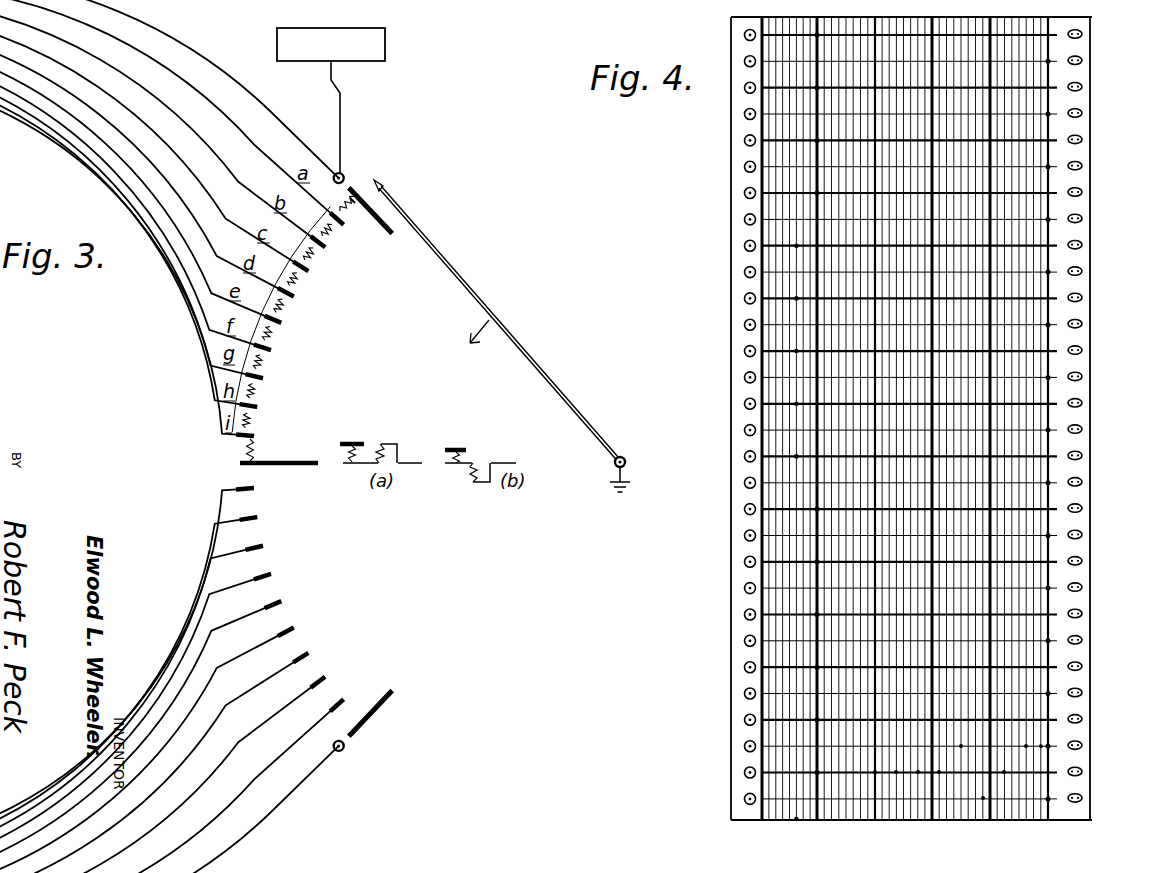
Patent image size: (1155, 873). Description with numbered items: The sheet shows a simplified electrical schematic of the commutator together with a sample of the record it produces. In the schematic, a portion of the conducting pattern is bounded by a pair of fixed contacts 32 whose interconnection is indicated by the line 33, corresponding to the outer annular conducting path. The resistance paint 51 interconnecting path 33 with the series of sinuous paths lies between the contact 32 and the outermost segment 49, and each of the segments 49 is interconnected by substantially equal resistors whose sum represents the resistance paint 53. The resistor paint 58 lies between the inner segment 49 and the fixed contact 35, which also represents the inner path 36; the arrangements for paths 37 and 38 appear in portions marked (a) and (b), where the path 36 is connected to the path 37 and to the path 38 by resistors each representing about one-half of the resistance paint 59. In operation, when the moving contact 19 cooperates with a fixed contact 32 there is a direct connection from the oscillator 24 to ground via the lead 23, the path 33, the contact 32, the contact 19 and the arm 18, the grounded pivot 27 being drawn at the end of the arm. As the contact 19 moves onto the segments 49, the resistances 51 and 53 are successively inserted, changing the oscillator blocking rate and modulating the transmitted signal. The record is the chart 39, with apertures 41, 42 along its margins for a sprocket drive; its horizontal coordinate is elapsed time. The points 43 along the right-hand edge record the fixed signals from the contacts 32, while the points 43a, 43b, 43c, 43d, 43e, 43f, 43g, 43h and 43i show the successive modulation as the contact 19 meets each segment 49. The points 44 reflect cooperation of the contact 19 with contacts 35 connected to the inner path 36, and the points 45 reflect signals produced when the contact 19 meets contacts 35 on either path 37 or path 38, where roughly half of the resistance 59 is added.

In FIG. 3, the arm 18 is at (446, 262).
In FIG. 3, the moving contact 19 is at (379, 181).
In FIG. 3, the lead 23 is at (342, 95).
In FIG. 3, the oscillator 24 is at (385, 44).
In FIG. 3, the grounded pivot 27 is at (627, 462).
In FIG. 3, the fixed contact 32 is at (393, 240).
In FIG. 3, the outer annular conducting path 33 is at (216, 177).
In FIG. 3, the fixed contact 35 is at (298, 467).
In FIG. 3, the inner conducting path 36 is at (353, 465).
In FIG. 3, the path 37 is at (410, 465).
In FIG. 3, the path 38 is at (498, 466).
In FIG. 4, the chart 39 is at (1090, 156).
In FIG. 4, the apertures 41 is at (740, 152).
In FIG. 4, the apertures 42 is at (1083, 219).
In FIG. 4, the points 43 is at (1050, 113).
In FIG. 4, the point 43a is at (1041, 772).
In FIG. 4, the point 43b is at (1026, 748).
In FIG. 4, the point 43c is at (1012, 777).
In FIG. 4, the point 43d is at (983, 800).
In FIG. 4, the point 43e is at (961, 748).
In FIG. 4, the point 43f is at (939, 772).
In FIG. 4, the point 43g is at (918, 773).
In FIG. 4, the point 43h is at (896, 772).
In FIG. 4, the point 43i is at (875, 773).
In FIG. 4, the points 44 is at (816, 87).
In FIG. 4, the points 45 is at (796, 298).
In FIG. 3, the segment 49 is at (349, 210).
In FIG. 3, the resistance paint 51 is at (352, 205).
In FIG. 3, the resistance paint 53 is at (281, 320).
In FIG. 3, the resistor paint 58 is at (257, 452).
In FIG. 3, the resistance paint 59 is at (380, 447).